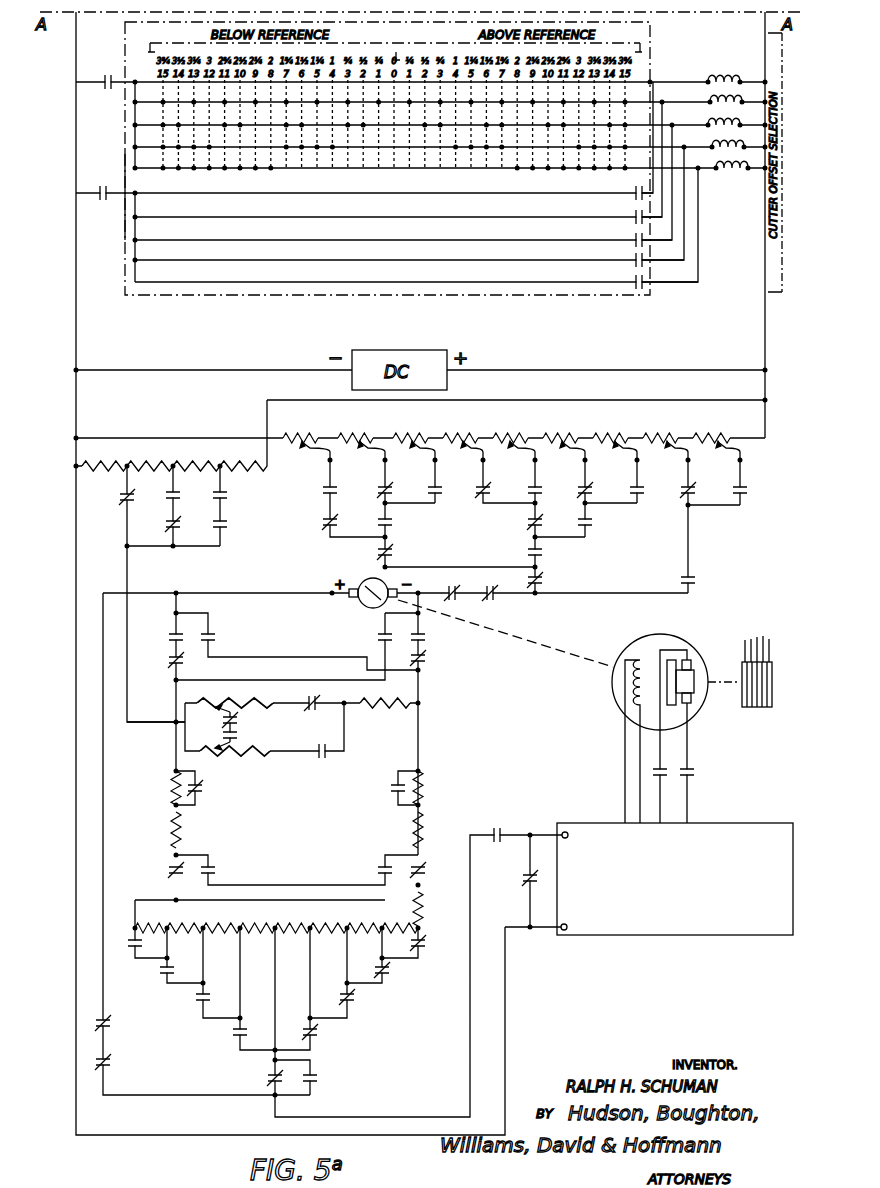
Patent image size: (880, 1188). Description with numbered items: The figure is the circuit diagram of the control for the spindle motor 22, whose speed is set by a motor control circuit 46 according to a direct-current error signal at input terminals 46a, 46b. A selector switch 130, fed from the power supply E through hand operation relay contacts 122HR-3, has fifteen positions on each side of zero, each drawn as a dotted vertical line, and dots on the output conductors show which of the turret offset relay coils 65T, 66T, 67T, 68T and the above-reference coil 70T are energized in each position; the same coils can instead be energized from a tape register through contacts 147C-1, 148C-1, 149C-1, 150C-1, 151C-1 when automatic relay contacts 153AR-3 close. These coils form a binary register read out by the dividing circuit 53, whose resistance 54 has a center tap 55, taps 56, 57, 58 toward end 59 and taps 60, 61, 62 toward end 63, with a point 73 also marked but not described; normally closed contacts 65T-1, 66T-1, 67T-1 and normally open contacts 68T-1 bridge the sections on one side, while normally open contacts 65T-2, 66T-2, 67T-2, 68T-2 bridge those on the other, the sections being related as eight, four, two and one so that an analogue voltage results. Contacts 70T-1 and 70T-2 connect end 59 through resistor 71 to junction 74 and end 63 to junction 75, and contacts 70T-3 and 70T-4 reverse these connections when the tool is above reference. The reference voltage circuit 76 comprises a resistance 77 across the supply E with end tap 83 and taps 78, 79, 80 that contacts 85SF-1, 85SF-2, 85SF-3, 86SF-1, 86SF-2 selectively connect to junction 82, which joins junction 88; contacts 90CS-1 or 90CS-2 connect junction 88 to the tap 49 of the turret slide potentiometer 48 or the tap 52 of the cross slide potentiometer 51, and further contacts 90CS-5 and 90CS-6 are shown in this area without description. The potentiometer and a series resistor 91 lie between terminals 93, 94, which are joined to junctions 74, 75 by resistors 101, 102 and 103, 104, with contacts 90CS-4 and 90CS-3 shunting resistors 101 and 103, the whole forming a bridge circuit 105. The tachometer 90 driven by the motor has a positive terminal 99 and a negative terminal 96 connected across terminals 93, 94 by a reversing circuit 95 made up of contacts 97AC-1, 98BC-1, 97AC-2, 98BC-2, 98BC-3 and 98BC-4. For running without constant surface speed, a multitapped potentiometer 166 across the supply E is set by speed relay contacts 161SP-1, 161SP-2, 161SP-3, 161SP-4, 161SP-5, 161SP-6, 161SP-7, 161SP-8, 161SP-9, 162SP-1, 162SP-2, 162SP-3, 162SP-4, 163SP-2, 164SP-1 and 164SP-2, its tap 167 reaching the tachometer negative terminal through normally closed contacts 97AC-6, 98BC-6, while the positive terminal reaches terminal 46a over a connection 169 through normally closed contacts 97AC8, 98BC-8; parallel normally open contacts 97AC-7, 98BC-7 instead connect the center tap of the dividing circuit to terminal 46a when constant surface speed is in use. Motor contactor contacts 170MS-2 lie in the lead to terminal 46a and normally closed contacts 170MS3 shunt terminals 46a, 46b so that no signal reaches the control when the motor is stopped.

The contacts of hand operation relay 122HR-3 is at (112, 74).
The selector switch 130 is at (116, 187).
The contacts of automatic operation relay 153AR-3 is at (104, 181).
The contacts of tape register relay 151C-1 is at (399, 194).
The contacts of tape register relay 147C-1 is at (399, 218).
The contacts of tape register relay 148C-1 is at (399, 241).
The contacts of tape register relay 149C-1 is at (399, 261).
The contacts of tape register relay 150C-1 is at (399, 283).
The relay coil 70T is at (707, 72).
The turret offset relay coil 65T is at (713, 93).
The turret offset relay coil 66T is at (718, 116).
The turret offset relay coil 67T is at (721, 138).
The turret offset relay coil 68T is at (727, 160).
The D.C. power supply E is at (452, 381).
The multitapped potentiometer 166 is at (468, 432).
The contacts of speed relay coil 161SP-1 is at (743, 487).
The contacts of speed relay coil 161SP-2 is at (706, 486).
The contacts of speed relay coil 161SP-3 is at (655, 483).
The contacts of speed relay coil 161SP-4 is at (603, 486).
The contacts of speed relay coil 161SP-5 is at (553, 483).
The contacts of speed relay coil 161SP-6 is at (501, 486).
The contacts of speed relay coil 161SP-7 is at (453, 483).
The contacts of speed relay coil 161SP-8 is at (403, 486).
The contacts of speed relay coil 161SP-9 is at (348, 483).
The contacts of speed relay coil 162SP-1 is at (591, 522).
The contacts of speed relay coil 162SP-2 is at (527, 522).
The contacts of speed relay coil 162SP-3 is at (393, 522).
The contacts of speed relay coil 162SP-4 is at (349, 514).
The contacts of speed relay coil 163SP-2 is at (393, 553).
The contacts of speed relay coil 164SP-1 is at (695, 580).
The contacts of speed relay coil 164SP-2 is at (543, 580).
The end tap 83 is at (104, 459).
The multitapped resistance 77 is at (190, 461).
The tap 78 is at (124, 484).
The tap 79 is at (178, 483).
The tap 80 is at (228, 485).
The reference voltage resistance circuit 76 is at (157, 534).
The junction 82 is at (128, 548).
The normally closed contacts 85SF-1 is at (120, 503).
The normally open contacts 85SF-2 is at (167, 493).
The normally open contacts 85SF-3 is at (227, 496).
The normally closed contacts 86SF-1 is at (198, 516).
The normally open contacts 86SF-2 is at (242, 527).
The feedback tachometer 90 is at (349, 596).
The positive terminal of tachometer 99 is at (320, 591).
The negative terminal of tachometer 96 is at (418, 592).
The tap 167 is at (509, 589).
The normally closed contacts 97AC-6 is at (446, 603).
The normally closed contacts 98BC-6 is at (490, 600).
The reversing circuit 95 is at (296, 650).
The contacts 97AC-2 is at (170, 637).
The contacts 98BC-4 is at (213, 636).
The normally closed contacts 98BC-2 is at (191, 662).
The contacts 98BC-3 is at (370, 642).
The normally open contacts 97AC-1 is at (431, 639).
The normally closed contacts 98BC-1 is at (431, 661).
The terminal 93 is at (426, 703).
The terminal 94 is at (175, 721).
The turret slide potentiometer 48 is at (240, 700).
The slidable tap 49 is at (214, 712).
The slidable tap 52 is at (213, 748).
The junction 88 is at (238, 726).
The cross slide potentiometer 51 is at (230, 756).
The resistor 91 is at (380, 708).
The normally closed contacts 90CS-1 is at (238, 720).
The normally open contacts 90CS-2 is at (238, 736).
The normally closed contacts 90CS-3 is at (202, 788).
The normally open contacts 90CS-4 is at (392, 788).
The contact 90CS-5 is at (318, 696).
The contact 90CS-6 is at (325, 758).
The resistor 103 is at (172, 787).
The resistor 104 is at (170, 825).
The junction 75 is at (170, 854).
The bridge circuit 105 is at (300, 833).
The resistor 101 is at (422, 787).
The resistor 102 is at (422, 817).
The junction 74 is at (423, 850).
The resistor 71 is at (424, 905).
The end of resistance 59 is at (424, 923).
The normally closed contacts 70T-1 is at (425, 872).
The normally closed contacts 70T-2 is at (162, 870).
The normally open contacts 70T-3 is at (380, 872).
The normally open contacts 70T-4 is at (220, 872).
The end of resistance 63 is at (116, 920).
The conductor 73 is at (182, 908).
The tapped resistance 54 is at (277, 922).
The variable resistance circuit 53 is at (268, 983).
The center tap 55 is at (277, 963).
The tap 56 is at (312, 963).
The tap 57 is at (348, 963).
The tap 58 is at (384, 963).
The tap 60 is at (238, 956).
The tap 61 is at (201, 950).
The tap 62 is at (153, 946).
The normally closed contacts 65T-1 is at (434, 943).
The normally open contacts 65T-2 is at (128, 952).
The normally closed contacts 66T-1 is at (389, 970).
The normally open contacts 66T-2 is at (162, 972).
The normally closed contacts 67T-1 is at (356, 997).
The normally open contacts 67T-2 is at (194, 1000).
The normally open contacts 68T-1 is at (320, 1033).
The normally open contacts 68T-2 is at (227, 1032).
The normally open contacts 97AC-7 is at (254, 1078).
The normally open contacts 98BC-7 is at (318, 1074).
The normally closed contacts 97AC8 is at (92, 1021).
The normally closed contacts 98BC-8 is at (94, 1059).
The connection 169 is at (103, 905).
The normally open contacts 170MS-2 is at (502, 823).
The normally closed contacts 170MS3 is at (520, 876).
The motor control circuit 46 is at (683, 930).
The input terminal 46a is at (565, 830).
The input terminal 46b is at (562, 931).
The motor 22 is at (692, 645).